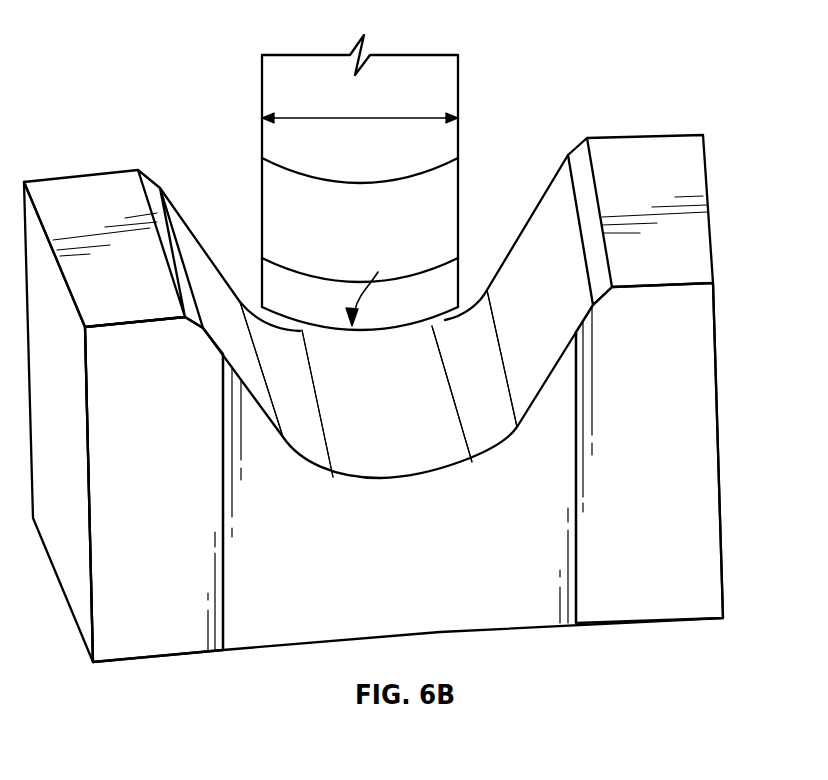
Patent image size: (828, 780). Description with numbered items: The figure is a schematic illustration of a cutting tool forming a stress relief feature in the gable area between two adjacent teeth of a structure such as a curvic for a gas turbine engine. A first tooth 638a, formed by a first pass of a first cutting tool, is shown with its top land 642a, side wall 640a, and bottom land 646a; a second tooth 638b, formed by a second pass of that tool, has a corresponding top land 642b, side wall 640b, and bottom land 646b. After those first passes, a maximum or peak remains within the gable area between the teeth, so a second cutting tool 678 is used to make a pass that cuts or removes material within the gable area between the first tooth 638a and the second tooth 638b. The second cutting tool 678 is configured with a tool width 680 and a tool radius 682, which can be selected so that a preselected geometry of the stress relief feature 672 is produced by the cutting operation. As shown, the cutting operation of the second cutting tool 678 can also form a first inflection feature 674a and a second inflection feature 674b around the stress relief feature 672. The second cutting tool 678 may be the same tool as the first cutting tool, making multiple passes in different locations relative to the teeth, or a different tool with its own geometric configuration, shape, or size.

The first tooth 638a is at (172, 400).
The second tooth 638b is at (683, 378).
The side wall 640a is at (175, 223).
The side wall 640b is at (552, 197).
The top land 642a is at (82, 192).
The top land 642b is at (657, 148).
The bottom land 646a is at (318, 465).
The bottom land 646b is at (495, 447).
The stress relief feature 672 is at (383, 468).
The first inflection feature 674a is at (313, 367).
The second inflection feature 674b is at (472, 457).
The second cutting tool 678 is at (263, 143).
The tool width 680 is at (347, 120).
The tool radius 682 is at (372, 288).